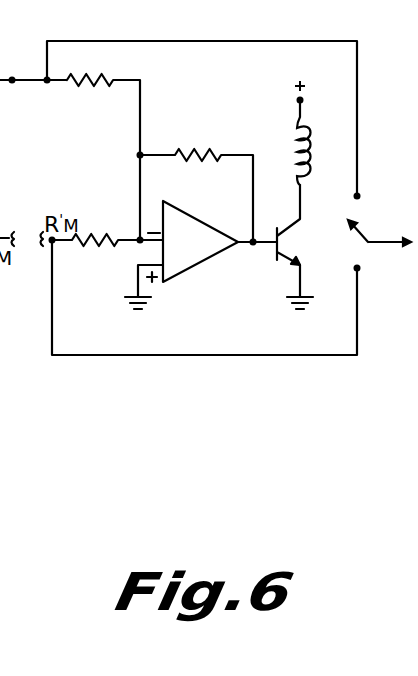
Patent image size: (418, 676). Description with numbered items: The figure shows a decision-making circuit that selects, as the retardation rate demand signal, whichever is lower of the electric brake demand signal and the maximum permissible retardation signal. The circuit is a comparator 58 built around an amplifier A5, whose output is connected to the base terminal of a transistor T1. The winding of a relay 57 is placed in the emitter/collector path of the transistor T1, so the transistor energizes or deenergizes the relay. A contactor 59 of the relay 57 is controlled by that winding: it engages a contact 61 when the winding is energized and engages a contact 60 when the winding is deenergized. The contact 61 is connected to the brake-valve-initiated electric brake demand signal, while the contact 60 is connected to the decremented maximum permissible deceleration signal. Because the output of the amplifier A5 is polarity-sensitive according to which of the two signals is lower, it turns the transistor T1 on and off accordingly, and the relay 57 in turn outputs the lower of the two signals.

The relay 57 is at (310, 147).
The comparator 58 is at (211, 399).
The contactor 59 is at (366, 232).
The contact 60 is at (357, 268).
The contact 61 is at (357, 196).
The amplifier A5 is at (196, 263).
The transistor T1 is at (298, 244).